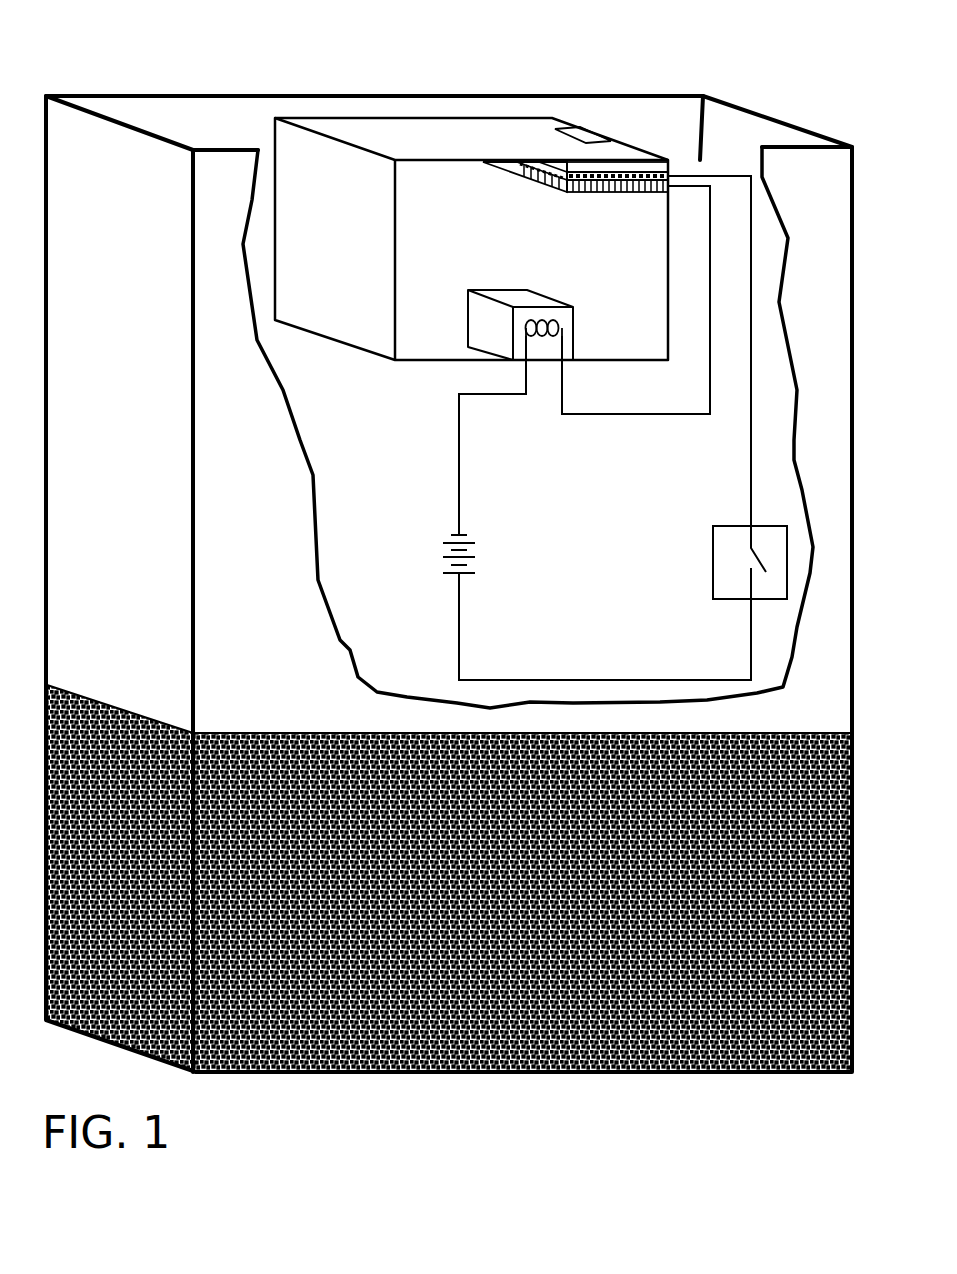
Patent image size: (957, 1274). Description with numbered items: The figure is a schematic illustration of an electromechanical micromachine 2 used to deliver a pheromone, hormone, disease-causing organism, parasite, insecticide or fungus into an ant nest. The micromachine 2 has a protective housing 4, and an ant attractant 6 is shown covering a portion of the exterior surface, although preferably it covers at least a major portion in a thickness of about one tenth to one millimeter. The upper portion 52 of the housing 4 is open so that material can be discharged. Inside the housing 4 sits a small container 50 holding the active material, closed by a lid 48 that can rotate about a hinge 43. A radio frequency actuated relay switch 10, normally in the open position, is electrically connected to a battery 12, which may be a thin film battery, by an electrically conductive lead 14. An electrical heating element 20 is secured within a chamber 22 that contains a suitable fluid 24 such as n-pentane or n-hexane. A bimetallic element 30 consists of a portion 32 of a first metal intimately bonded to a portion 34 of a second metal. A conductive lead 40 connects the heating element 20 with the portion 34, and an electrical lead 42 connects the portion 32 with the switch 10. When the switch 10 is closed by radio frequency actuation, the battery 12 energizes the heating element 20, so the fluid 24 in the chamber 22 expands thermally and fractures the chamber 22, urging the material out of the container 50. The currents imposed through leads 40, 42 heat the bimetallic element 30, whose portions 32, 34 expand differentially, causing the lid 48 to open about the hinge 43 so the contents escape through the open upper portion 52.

The micromachine 2 is at (147, 95).
The protective housing 4 is at (773, 113).
The ant attractant 6 is at (622, 1050).
The radio frequency actuated relay switch 10 is at (713, 555).
The battery 12 is at (442, 548).
The electrically conductive lead 14 is at (461, 633).
The electrical heating element 20 is at (563, 329).
The chamber 22 is at (497, 290).
The fluid 24 is at (510, 298).
The bimetallic element 30 is at (540, 187).
The first metal portion 32 is at (580, 193).
The second metal portion 34 is at (647, 195).
The conductive lead 40 is at (645, 416).
The electrical lead 42 is at (748, 478).
The hinge 43 is at (590, 131).
The lid 48 is at (452, 132).
The container 50 is at (323, 117).
The upper portion 52 is at (232, 131).